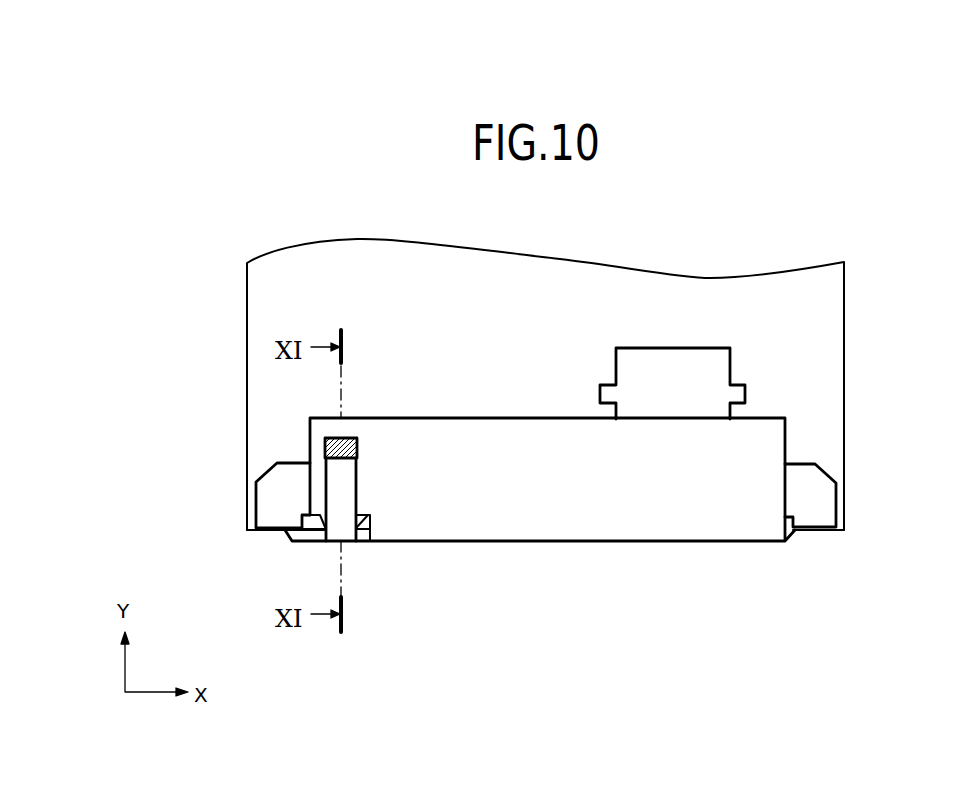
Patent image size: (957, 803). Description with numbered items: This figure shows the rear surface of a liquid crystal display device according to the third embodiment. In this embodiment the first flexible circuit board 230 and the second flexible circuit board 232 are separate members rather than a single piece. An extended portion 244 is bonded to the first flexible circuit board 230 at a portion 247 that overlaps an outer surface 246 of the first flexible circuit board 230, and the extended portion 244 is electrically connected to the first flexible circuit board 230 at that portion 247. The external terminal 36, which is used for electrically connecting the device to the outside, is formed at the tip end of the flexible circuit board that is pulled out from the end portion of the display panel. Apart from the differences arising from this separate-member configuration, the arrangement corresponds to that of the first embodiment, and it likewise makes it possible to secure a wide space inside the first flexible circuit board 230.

The external terminal 36 is at (731, 370).
The outer surface 246 is at (577, 496).
The extended portion 244 is at (325, 478).
The portion 247 is at (357, 447).
The second flexible circuit board 232 is at (256, 496).
The first flexible circuit board 230 is at (308, 496).